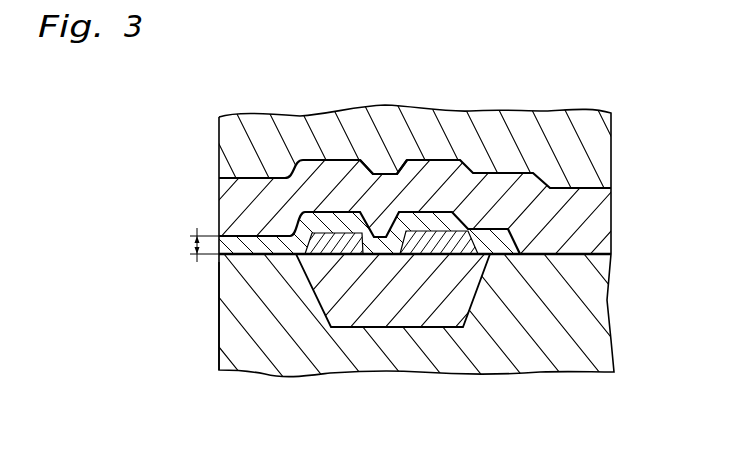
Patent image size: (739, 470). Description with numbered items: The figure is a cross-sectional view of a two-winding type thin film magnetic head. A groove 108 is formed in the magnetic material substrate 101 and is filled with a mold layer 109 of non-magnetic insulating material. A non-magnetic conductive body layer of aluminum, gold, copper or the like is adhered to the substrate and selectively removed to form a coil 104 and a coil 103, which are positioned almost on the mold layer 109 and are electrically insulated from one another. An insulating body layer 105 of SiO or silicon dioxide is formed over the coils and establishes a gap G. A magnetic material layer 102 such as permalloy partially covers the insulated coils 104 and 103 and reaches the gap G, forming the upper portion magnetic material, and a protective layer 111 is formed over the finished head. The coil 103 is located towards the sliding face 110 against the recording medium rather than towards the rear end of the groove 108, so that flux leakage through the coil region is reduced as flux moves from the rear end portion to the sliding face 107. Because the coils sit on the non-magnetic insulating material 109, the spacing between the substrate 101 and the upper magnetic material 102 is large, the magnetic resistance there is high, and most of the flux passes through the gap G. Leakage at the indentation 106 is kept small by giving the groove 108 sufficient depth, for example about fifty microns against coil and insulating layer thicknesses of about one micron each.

The magnetic material substrate 101 is at (580, 282).
The magnetic material layer 102 is at (238, 197).
The coil 103 is at (494, 302).
The coil 104 is at (333, 256).
The insulating body layer 105 is at (219, 256).
The indentation 106 is at (382, 226).
The sliding face 107 is at (219, 340).
The groove 108 is at (452, 327).
The mold layer 109 is at (438, 296).
The sliding face 110 is at (219, 292).
The protective layer 111 is at (543, 140).
The gap G is at (195, 246).